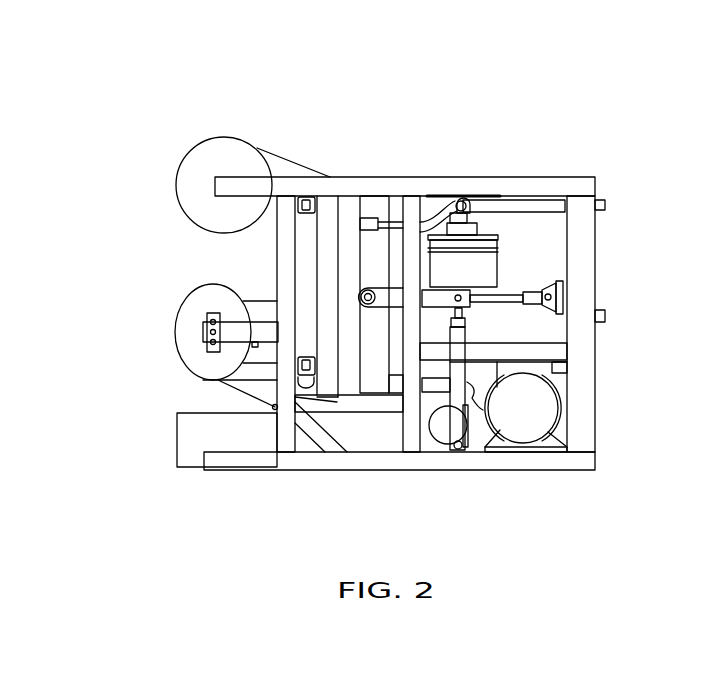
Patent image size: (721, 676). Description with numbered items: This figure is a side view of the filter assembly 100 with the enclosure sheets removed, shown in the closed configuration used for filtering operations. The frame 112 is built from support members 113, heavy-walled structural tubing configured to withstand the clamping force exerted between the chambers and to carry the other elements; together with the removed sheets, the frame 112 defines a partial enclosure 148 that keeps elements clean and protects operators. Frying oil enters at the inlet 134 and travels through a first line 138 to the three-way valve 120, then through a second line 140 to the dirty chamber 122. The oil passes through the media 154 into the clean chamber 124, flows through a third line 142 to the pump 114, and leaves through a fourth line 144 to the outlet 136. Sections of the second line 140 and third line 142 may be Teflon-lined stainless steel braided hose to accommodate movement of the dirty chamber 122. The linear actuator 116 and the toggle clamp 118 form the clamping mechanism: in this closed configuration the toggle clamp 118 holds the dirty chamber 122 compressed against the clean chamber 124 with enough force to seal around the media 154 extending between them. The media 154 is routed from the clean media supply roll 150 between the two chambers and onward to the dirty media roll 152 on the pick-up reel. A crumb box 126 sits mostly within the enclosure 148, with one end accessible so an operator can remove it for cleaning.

The filter assembly 100 is at (534, 84).
The frame 112 is at (578, 417).
The support members 113 is at (412, 423).
The pump 114 is at (522, 425).
The linear actuator 116 is at (458, 335).
The toggle clamp 118 is at (460, 295).
The three-way valve 120 is at (463, 217).
The dirty chamber 122 is at (350, 207).
The clean chamber 124 is at (327, 225).
The crumb box 126 is at (187, 433).
The inlet 134 is at (620, 206).
The outlet 136 is at (612, 317).
The first line 138 is at (542, 203).
The second line 140 is at (447, 207).
The third line 142 is at (480, 408).
The fourth line 144 is at (560, 365).
The enclosure 148 is at (532, 252).
The clean media supply roll 150 is at (207, 158).
The dirty media roll 152 is at (182, 352).
The media 154 is at (288, 157).